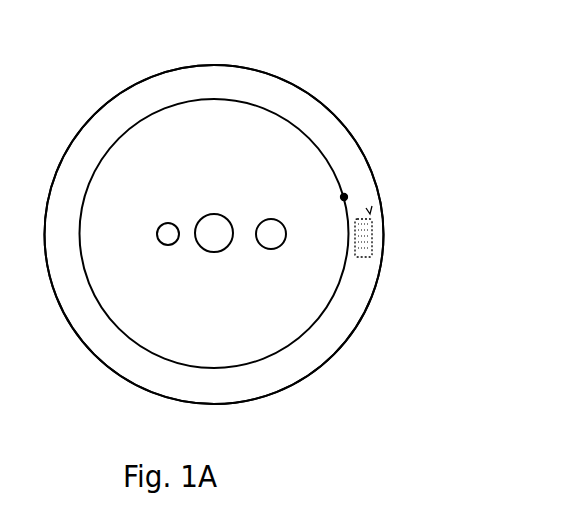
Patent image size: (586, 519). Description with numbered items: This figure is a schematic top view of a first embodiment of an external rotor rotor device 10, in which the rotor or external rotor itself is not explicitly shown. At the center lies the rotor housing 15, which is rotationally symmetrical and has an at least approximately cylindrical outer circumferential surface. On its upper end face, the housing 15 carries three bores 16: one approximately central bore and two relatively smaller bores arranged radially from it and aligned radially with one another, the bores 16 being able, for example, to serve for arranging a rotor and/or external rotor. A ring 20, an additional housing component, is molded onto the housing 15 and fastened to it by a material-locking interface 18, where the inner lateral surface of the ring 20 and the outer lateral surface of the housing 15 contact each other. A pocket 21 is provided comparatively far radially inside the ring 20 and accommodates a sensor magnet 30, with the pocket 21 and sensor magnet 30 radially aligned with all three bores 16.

The external rotor rotor device 10 is at (360, 115).
The rotor housing 15 is at (270, 154).
The bores 16 is at (158, 226).
The material-locking interface 18 is at (344, 197).
The ring 20 is at (358, 305).
The pocket 21 is at (370, 213).
The sensor magnet 30 is at (372, 238).